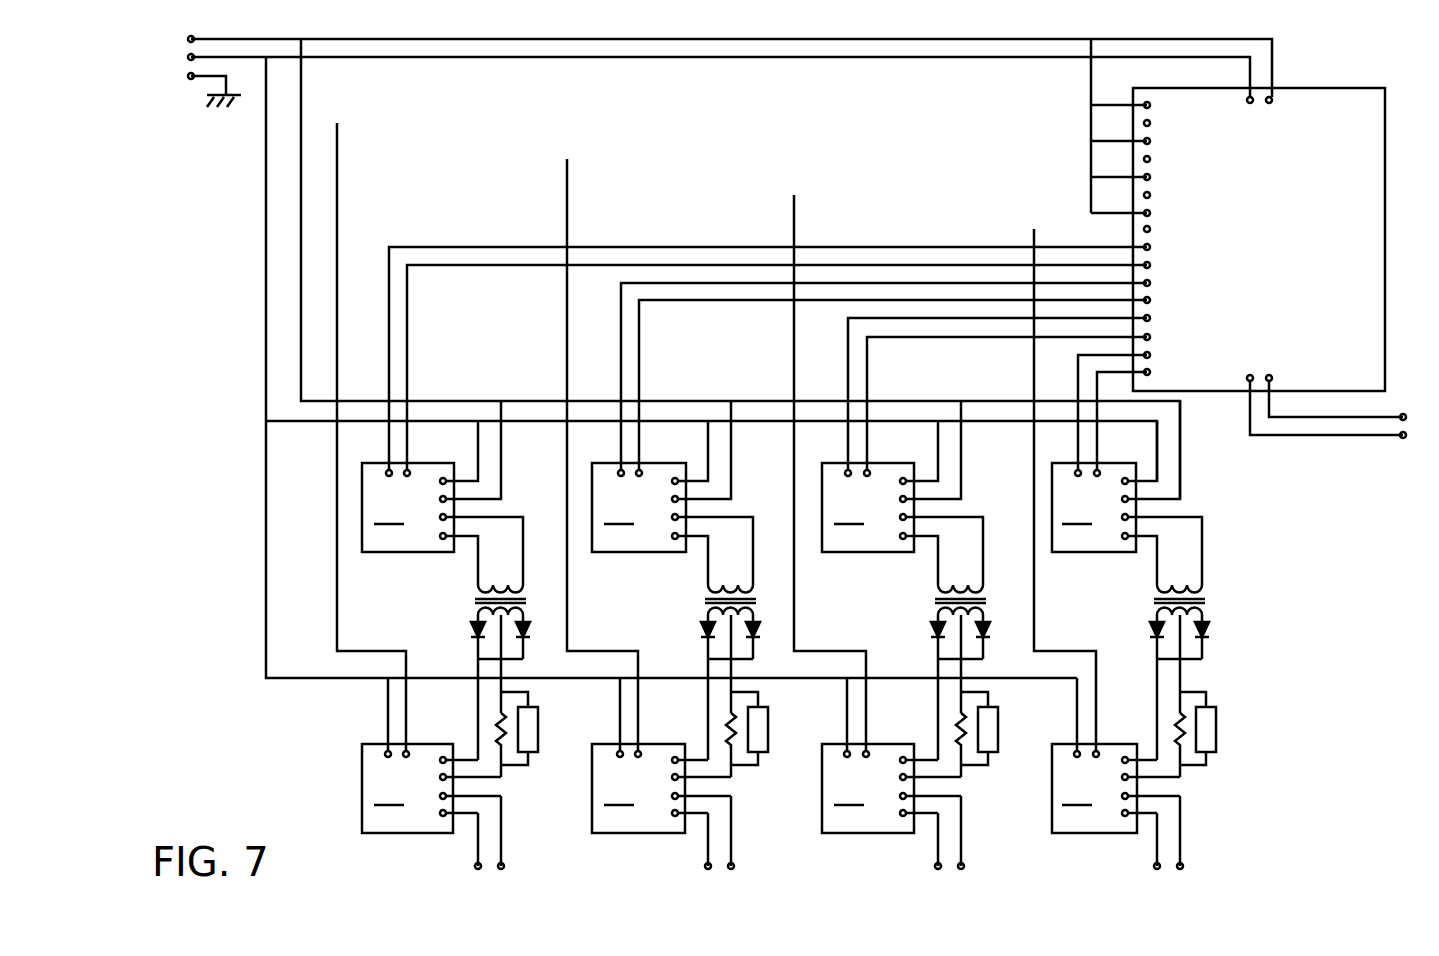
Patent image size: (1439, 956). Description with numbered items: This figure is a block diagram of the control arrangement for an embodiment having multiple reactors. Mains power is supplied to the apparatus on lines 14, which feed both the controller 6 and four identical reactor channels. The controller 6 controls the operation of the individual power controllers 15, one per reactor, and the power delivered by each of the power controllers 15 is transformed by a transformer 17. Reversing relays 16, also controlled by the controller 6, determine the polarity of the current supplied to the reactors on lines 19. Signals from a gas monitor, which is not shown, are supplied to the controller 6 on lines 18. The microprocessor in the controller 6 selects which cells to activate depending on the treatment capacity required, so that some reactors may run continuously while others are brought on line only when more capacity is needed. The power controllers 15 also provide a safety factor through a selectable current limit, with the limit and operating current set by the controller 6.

The controller 6 is at (1268, 268).
The lines 14 is at (194, 71).
The power controllers 15 is at (782, 416).
The reversing relays 16 is at (758, 478).
The transformers 17 is at (475, 601).
The lines 18 is at (1344, 410).
The lines 19 is at (829, 850).